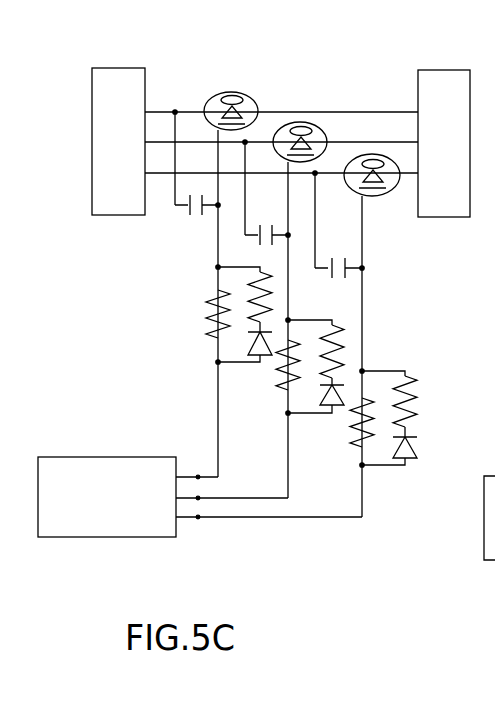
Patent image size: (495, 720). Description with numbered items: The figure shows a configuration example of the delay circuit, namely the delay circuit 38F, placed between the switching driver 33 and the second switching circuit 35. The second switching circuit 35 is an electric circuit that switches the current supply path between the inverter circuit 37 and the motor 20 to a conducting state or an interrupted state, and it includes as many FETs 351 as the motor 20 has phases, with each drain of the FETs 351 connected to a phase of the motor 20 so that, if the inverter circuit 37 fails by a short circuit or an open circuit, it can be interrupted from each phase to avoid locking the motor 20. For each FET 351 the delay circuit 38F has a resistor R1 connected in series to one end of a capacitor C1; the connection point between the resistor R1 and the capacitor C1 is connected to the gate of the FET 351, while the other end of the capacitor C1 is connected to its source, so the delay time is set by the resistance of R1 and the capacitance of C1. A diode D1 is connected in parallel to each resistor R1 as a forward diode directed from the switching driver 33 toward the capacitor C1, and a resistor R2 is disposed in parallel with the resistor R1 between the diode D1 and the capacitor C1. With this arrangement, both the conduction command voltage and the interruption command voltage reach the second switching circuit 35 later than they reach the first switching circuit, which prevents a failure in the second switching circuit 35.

The motor 20 is at (447, 68).
The switching driver 33 is at (147, 455).
The second switching circuit 35 is at (281, 158).
The FET 351 is at (246, 95).
The inverter circuit 37 is at (128, 66).
The delay circuit 38F is at (265, 323).
The capacitor C1 is at (192, 193).
The resistor R1 is at (212, 334).
The resistor R2 is at (290, 293).
The diode D1 is at (266, 353).